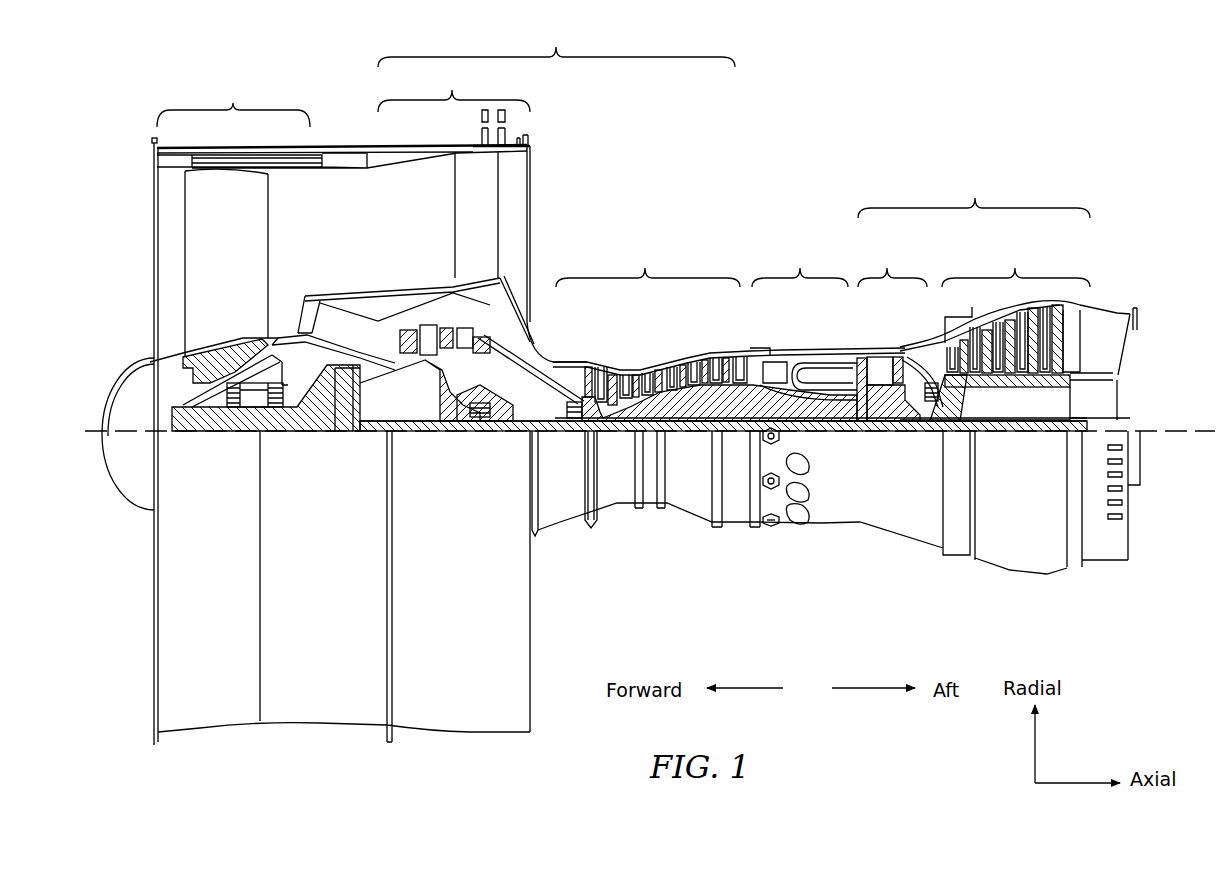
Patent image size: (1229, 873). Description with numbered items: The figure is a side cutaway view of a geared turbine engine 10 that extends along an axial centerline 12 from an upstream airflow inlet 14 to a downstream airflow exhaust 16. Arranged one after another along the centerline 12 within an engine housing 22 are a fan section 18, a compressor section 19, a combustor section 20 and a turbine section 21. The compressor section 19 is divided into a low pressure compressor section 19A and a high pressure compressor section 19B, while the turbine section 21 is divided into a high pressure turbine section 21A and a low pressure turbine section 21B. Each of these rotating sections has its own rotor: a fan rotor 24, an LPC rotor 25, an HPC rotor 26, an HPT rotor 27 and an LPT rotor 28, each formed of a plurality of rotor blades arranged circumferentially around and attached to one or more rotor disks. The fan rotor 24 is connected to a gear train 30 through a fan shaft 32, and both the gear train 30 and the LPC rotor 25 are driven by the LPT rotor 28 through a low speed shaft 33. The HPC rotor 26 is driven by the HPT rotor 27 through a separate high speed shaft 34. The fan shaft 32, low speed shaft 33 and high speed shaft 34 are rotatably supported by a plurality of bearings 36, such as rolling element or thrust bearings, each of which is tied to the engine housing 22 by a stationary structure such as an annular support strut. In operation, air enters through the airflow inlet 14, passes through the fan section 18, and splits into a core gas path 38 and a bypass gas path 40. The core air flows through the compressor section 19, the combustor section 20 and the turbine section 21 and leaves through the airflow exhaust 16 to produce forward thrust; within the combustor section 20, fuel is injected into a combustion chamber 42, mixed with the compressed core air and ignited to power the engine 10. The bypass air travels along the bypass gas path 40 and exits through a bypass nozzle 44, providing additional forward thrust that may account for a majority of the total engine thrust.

The geared turbine engine 10 is at (122, 126).
The axial centerline 12 is at (1183, 452).
The airflow inlet 14 is at (154, 212).
The airflow exhaust 16 is at (1140, 330).
The fan section 18 is at (233, 101).
The compressor section 19 is at (556, 43).
The low pressure compressor (LPC) section 19A is at (454, 87).
The high pressure compressor (HPC) section 19B is at (648, 262).
The combustor section 20 is at (800, 262).
The turbine section 21 is at (974, 194).
The high pressure turbine (HPT) section 21A is at (892, 262).
The low pressure turbine (LPT) section 21B is at (1016, 262).
The engine housing 22 is at (546, 540).
The fan rotor 24 is at (152, 353).
The LPC rotor 25 is at (438, 397).
The HPC rotor 26 is at (698, 400).
The HPT rotor 27 is at (878, 422).
The LPT rotor 28 is at (1017, 382).
The gear train 30 is at (345, 433).
The fan shaft 32 is at (213, 433).
The low speed shaft 33 is at (742, 435).
The high speed shaft 34 is at (820, 430).
The bearings 36 is at (273, 410).
The core gas path 38 is at (547, 362).
The bypass gas path 40 is at (391, 224).
The combustion chamber 42 is at (810, 375).
The bypass nozzle 44 is at (532, 185).